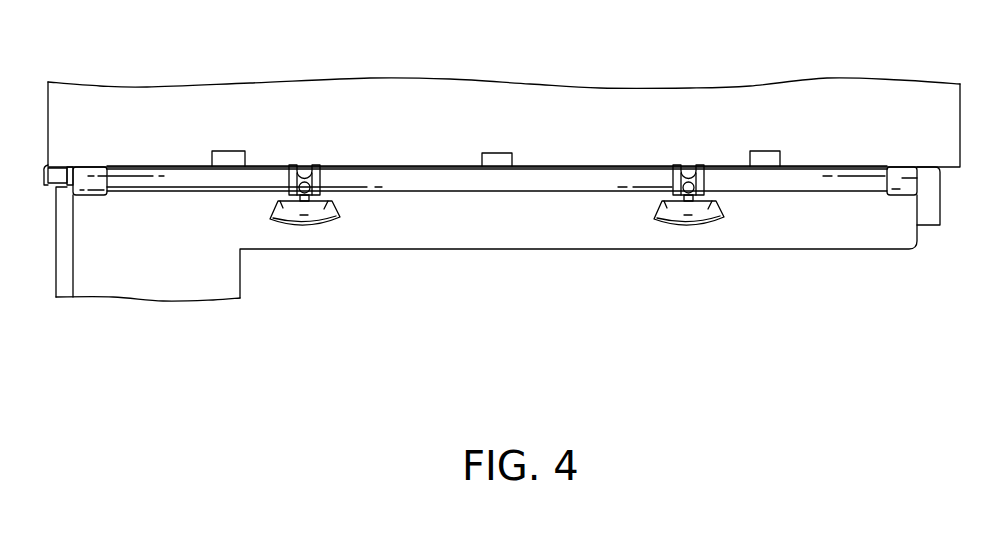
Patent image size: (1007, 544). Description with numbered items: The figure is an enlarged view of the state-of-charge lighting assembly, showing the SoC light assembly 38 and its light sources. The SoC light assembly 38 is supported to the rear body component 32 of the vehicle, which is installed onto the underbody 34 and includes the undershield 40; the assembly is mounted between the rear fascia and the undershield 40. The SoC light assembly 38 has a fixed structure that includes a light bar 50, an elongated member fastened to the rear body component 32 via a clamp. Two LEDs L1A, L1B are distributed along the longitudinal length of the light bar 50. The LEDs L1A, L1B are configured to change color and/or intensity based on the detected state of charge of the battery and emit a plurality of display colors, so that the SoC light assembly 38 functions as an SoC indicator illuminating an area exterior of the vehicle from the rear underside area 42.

The rear body component 32 is at (408, 115).
The underbody 34 is at (408, 115).
The SoC light assembly 38 is at (303, 341).
The undershield 40 is at (837, 232).
The rear underside area 42 is at (583, 307).
The light bar 50 is at (558, 166).
The LED L1A is at (317, 227).
The LED L1B is at (678, 227).